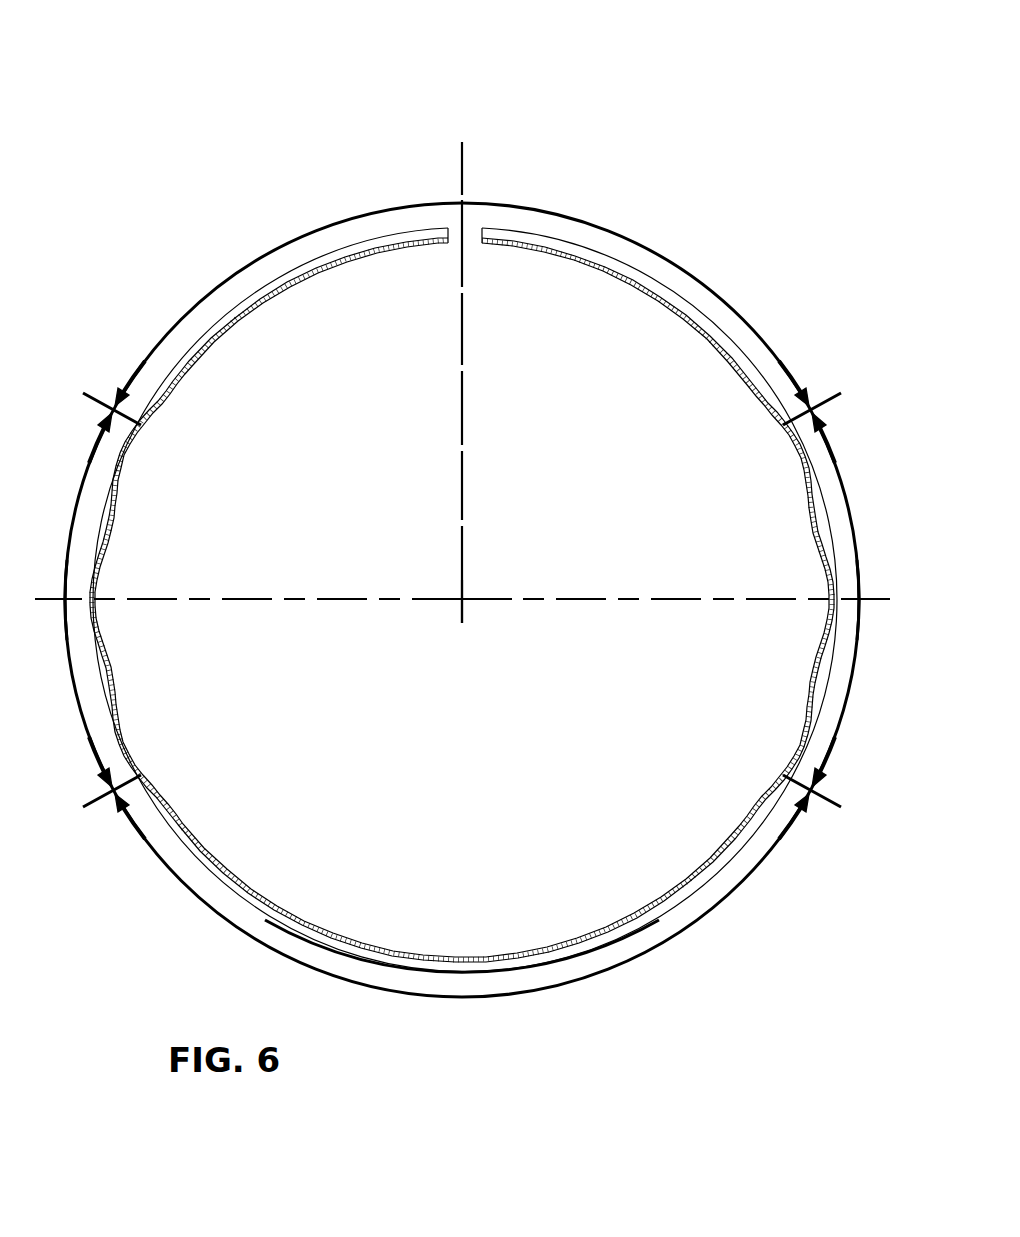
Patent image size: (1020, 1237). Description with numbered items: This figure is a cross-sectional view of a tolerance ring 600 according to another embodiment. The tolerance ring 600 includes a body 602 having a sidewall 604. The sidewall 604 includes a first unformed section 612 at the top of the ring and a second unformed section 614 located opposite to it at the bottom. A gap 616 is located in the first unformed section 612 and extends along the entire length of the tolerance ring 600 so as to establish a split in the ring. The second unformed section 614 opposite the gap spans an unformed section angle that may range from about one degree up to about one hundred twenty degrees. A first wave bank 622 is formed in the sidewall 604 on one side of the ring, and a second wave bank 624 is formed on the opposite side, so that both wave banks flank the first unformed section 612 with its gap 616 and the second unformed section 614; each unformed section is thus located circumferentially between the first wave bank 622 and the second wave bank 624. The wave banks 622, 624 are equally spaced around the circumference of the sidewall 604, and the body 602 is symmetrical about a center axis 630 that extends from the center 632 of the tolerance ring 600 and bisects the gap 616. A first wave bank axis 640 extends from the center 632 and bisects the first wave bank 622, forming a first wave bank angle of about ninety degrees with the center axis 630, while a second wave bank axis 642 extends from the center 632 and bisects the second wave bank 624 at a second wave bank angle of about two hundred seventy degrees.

The tolerance ring 600 is at (690, 182).
The body 602 is at (668, 295).
The sidewall 604 is at (710, 343).
The first unformed section 612 is at (265, 255).
The second unformed section 614 is at (497, 993).
The gap 616 is at (462, 235).
The first wave bank 622 is at (858, 600).
The second wave bank 624 is at (69, 567).
The center axis 630 is at (462, 170).
The center 632 is at (462, 599).
The first wave bank axis 640 is at (625, 599).
The second wave bank axis 642 is at (245, 599).